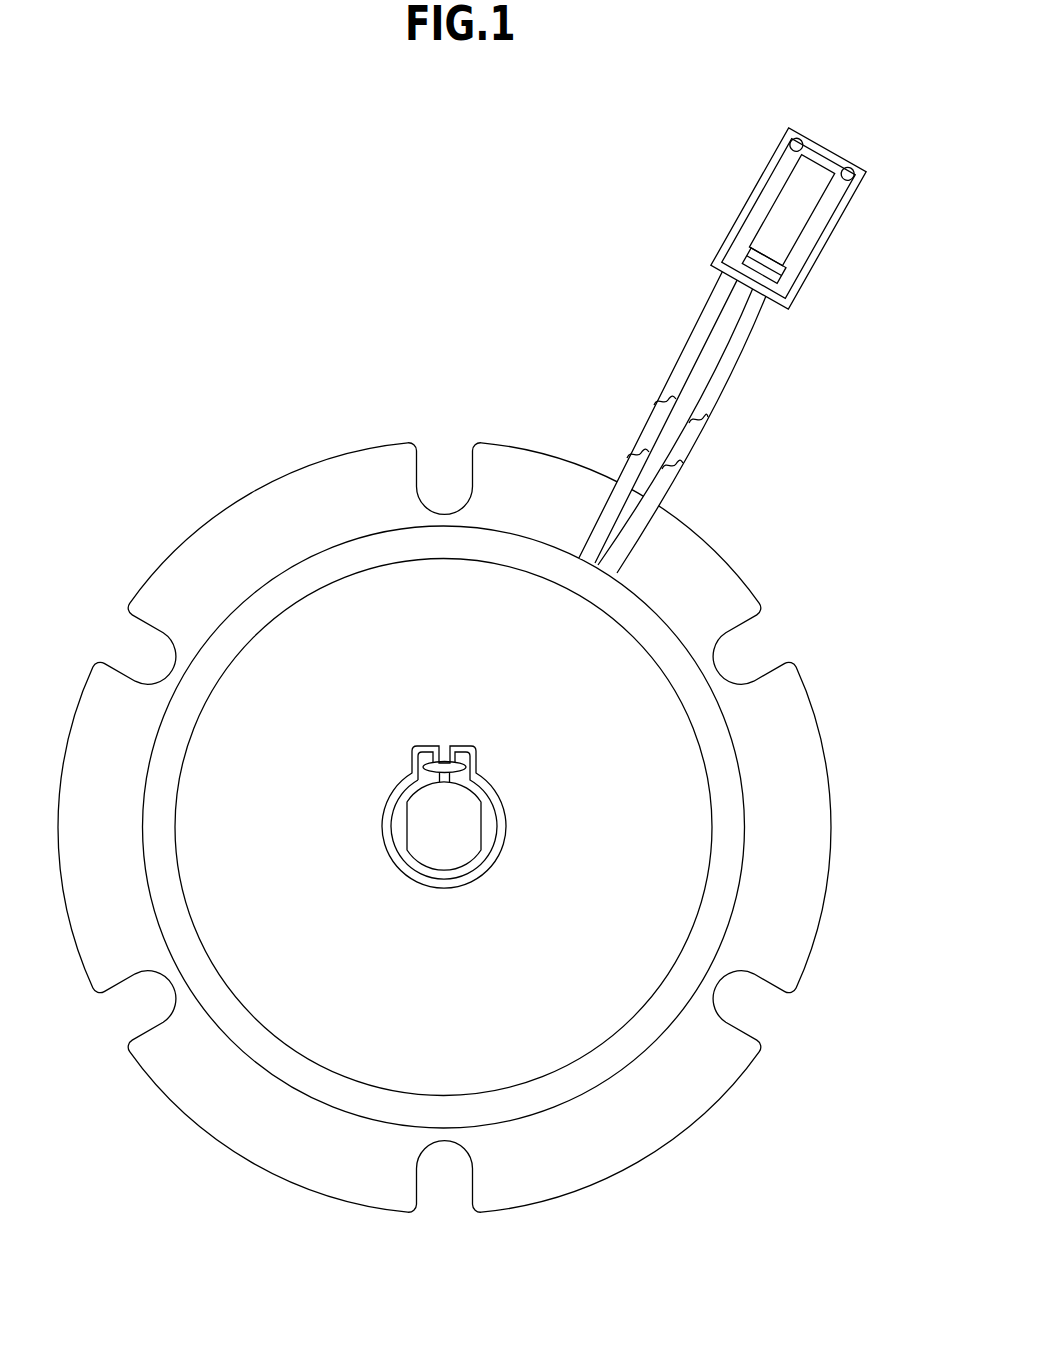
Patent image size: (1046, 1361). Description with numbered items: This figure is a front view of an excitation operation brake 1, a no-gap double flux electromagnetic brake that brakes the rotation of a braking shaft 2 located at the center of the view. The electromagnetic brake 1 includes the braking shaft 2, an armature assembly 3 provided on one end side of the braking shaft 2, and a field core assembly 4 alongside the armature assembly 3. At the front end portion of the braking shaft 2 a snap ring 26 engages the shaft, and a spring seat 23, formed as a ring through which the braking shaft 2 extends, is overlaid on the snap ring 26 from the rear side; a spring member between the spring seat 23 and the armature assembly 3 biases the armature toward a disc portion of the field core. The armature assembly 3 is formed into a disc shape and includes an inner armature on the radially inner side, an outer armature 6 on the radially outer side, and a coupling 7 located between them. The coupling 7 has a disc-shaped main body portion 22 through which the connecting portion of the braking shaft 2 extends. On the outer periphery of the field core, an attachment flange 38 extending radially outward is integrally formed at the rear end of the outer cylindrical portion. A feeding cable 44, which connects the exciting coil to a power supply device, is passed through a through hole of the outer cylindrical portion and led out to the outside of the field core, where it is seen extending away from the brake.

The excitation operation brake 1 is at (162, 194).
The braking shaft 2 is at (410, 876).
The armature assembly 3 is at (377, 536).
The field core assembly 4 is at (185, 533).
The outer armature 6 is at (490, 527).
The coupling 7 is at (507, 563).
The main body portion 22 is at (547, 617).
The spring seat 23 is at (500, 845).
The snap ring 26 is at (484, 866).
The attachment flange 38 is at (243, 495).
The feeding cable 44 is at (728, 380).